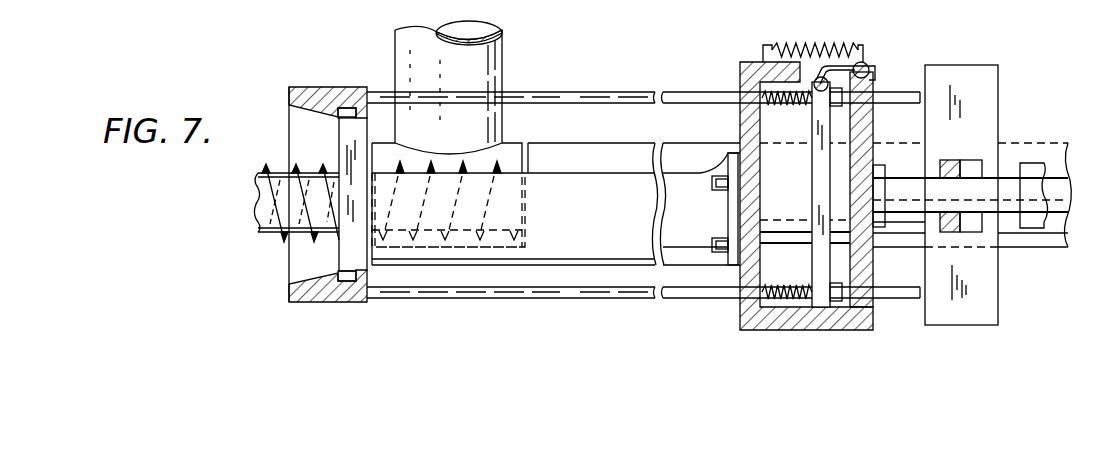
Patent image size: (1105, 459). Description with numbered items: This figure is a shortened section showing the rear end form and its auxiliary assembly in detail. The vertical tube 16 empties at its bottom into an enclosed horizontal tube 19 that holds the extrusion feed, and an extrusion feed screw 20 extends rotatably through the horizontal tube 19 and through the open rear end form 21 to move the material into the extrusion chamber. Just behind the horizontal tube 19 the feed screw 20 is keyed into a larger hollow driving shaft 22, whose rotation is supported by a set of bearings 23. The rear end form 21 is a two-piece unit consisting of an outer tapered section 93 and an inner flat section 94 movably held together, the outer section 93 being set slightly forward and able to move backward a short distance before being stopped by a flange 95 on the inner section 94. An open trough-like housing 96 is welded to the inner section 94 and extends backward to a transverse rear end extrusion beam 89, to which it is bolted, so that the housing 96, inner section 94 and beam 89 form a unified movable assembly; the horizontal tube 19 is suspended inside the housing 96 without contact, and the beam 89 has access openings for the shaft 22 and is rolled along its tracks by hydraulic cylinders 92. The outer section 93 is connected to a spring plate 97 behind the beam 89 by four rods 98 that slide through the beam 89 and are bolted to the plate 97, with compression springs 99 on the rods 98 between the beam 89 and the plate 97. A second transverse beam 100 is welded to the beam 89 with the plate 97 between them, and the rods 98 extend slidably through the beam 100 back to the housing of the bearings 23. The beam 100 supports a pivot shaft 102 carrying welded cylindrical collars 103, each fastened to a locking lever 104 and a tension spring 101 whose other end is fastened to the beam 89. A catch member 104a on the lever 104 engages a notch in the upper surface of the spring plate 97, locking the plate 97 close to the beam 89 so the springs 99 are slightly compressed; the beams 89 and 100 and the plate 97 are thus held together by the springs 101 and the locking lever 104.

The vertical tube 16 is at (500, 62).
The horizontal tube 19 is at (522, 150).
The extrusion feed screw 20 is at (272, 232).
The rear end form 21 is at (299, 75).
The hollow driving shaft 22 is at (638, 152).
The bearings 23 is at (990, 78).
The rear end extrusion beam 89 is at (740, 72).
The hydraulic cylinders 92 is at (1025, 155).
The outer tapered section 93 is at (306, 87).
The inner flat section 94 is at (345, 145).
The flange 95 is at (360, 96).
The housing 96 is at (702, 258).
The spring plate 97 is at (816, 188).
The rods 98 is at (626, 93).
The compression springs 99 is at (768, 106).
The second transverse beam 100 is at (873, 122).
The tension spring 101 is at (796, 44).
The pivot shaft 102 is at (872, 79).
The cylindrical collars 103 is at (870, 66).
The locking lever 104 is at (846, 66).
The catch member 104a is at (818, 77).